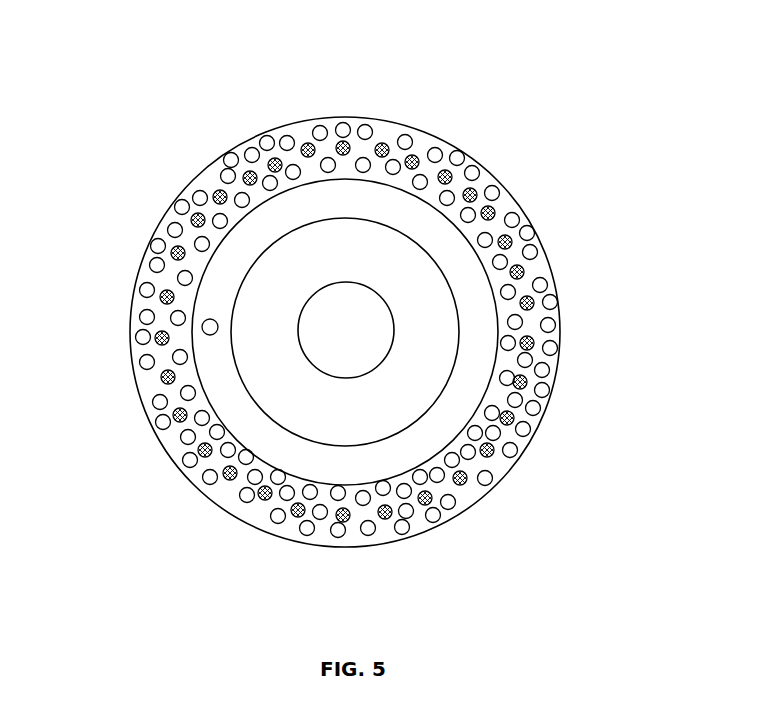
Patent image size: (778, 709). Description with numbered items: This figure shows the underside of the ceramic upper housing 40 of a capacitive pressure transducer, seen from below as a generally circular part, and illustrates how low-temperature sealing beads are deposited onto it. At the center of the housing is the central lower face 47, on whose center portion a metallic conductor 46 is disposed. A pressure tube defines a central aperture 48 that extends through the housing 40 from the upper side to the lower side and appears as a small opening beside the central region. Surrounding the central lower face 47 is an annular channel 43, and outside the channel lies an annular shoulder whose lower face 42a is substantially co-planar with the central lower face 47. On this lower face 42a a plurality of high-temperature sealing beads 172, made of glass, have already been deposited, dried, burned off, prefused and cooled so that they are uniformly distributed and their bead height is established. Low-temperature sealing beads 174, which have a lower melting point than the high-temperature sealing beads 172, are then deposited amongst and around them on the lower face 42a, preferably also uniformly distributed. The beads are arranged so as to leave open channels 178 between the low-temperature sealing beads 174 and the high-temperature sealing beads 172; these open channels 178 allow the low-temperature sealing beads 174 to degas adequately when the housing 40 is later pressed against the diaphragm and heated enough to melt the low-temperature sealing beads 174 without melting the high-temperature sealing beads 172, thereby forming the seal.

The upper housing 40 is at (240, 140).
The lower face of the annular shoulder 42a is at (512, 205).
The annular channel 43 is at (257, 437).
The metallic conductor 46 is at (362, 337).
The central lower face 47 is at (314, 270).
The central aperture 48 is at (213, 321).
The high-temperature sealing beads 172 is at (387, 145).
The low-temperature sealing beads 174 is at (288, 136).
The open channels 178 is at (216, 190).